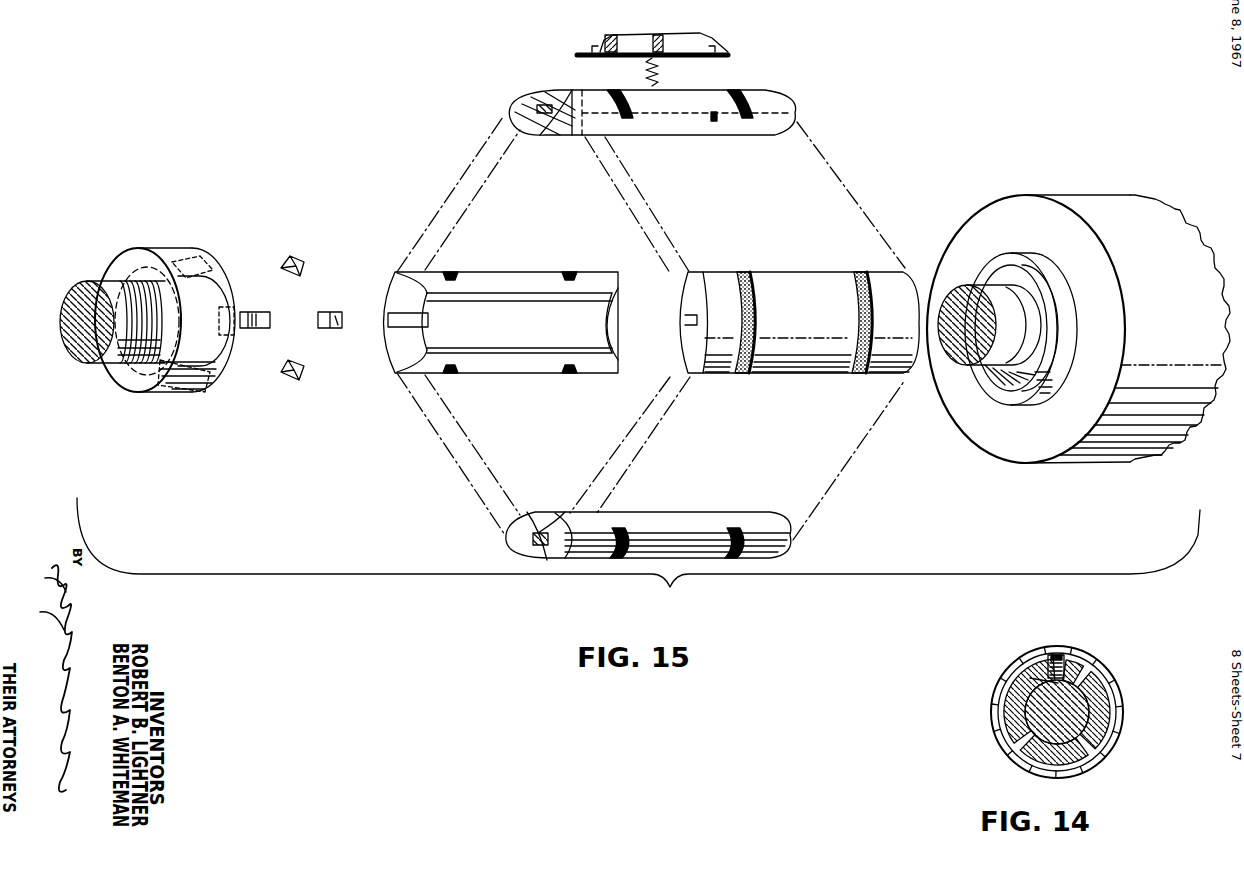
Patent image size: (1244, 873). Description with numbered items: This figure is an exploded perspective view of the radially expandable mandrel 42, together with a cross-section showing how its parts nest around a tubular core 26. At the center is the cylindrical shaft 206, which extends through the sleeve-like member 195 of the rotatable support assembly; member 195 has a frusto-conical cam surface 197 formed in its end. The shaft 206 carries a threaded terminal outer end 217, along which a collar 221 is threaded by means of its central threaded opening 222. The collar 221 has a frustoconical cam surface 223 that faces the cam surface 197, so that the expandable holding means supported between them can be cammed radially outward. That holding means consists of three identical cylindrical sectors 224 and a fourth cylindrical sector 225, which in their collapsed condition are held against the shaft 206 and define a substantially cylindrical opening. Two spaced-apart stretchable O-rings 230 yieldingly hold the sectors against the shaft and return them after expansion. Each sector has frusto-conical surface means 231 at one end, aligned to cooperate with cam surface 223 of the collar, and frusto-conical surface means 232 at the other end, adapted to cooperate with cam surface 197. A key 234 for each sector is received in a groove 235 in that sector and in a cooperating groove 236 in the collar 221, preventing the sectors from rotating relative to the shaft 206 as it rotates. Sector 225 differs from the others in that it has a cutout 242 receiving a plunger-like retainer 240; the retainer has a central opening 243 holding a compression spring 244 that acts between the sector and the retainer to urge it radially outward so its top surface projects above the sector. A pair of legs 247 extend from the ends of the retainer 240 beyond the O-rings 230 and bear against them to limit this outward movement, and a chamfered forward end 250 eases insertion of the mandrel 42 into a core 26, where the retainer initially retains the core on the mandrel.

In FIG. 15, the mandrel 42 is at (292, 99).
In FIG. 15, the sleeve-like member 195 is at (1089, 196).
In FIG. 15, the frusto-conical cam surface 197 is at (1002, 272).
In FIG. 15, the cylindrical shaft 206 is at (963, 352).
In FIG. 14, the cylindrical shaft 206 is at (1037, 722).
In FIG. 15, the threaded terminal outer end 217 is at (112, 362).
In FIG. 15, the collar 221 is at (147, 252).
In FIG. 15, the central threaded opening 222 is at (118, 284).
In FIG. 15, the frustoconical cam surface 223 is at (221, 338).
In FIG. 15, the cylindrical sectors 224 is at (497, 362).
In FIG. 14, the cylindrical sectors 224 is at (1006, 720).
In FIG. 15, the cylindrical sector 225 is at (680, 128).
In FIG. 14, the cylindrical sector 225 is at (1092, 677).
In FIG. 15, the O-rings 230 is at (750, 252).
In FIG. 15, the frusto-conical surface means 231 is at (537, 130).
In FIG. 15, the frusto-conical surface means 232 is at (612, 332).
In FIG. 15, the key 234 is at (303, 263).
In FIG. 15, the groove 235 is at (543, 106).
In FIG. 15, the groove 236 is at (204, 258).
In FIG. 15, the retainer 240 is at (705, 34).
In FIG. 14, the retainer 240 is at (1056, 652).
In FIG. 15, the cutout 242 is at (714, 120).
In FIG. 14, the cutout 242 is at (1030, 678).
In FIG. 15, the central opening 243 is at (672, 58).
In FIG. 15, the compression spring 244 is at (645, 74).
In FIG. 14, the compression spring 244 is at (1070, 660).
In FIG. 15, the legs 247 is at (592, 52).
In FIG. 15, the chamfered forward end 250 is at (612, 34).
In FIG. 14, the core 26 is at (1118, 709).